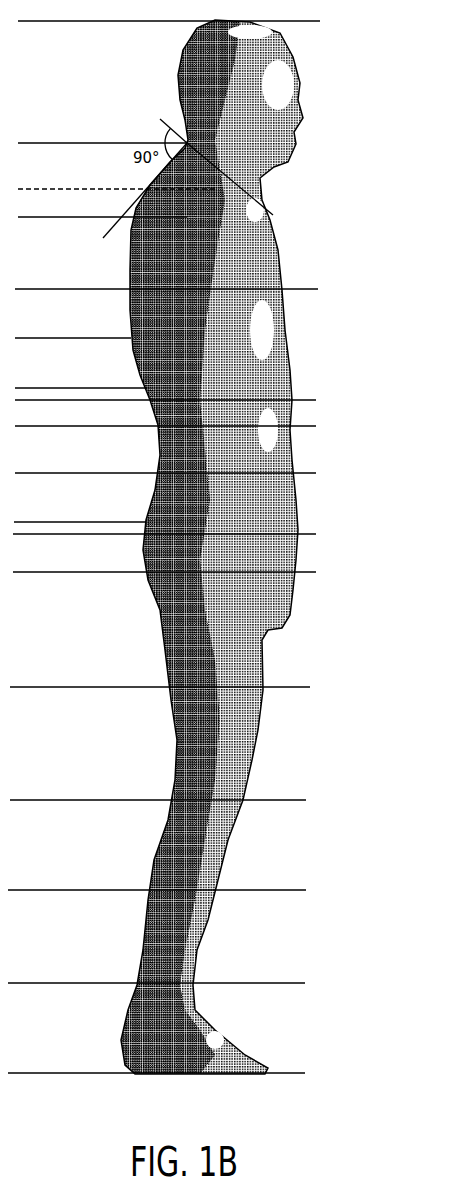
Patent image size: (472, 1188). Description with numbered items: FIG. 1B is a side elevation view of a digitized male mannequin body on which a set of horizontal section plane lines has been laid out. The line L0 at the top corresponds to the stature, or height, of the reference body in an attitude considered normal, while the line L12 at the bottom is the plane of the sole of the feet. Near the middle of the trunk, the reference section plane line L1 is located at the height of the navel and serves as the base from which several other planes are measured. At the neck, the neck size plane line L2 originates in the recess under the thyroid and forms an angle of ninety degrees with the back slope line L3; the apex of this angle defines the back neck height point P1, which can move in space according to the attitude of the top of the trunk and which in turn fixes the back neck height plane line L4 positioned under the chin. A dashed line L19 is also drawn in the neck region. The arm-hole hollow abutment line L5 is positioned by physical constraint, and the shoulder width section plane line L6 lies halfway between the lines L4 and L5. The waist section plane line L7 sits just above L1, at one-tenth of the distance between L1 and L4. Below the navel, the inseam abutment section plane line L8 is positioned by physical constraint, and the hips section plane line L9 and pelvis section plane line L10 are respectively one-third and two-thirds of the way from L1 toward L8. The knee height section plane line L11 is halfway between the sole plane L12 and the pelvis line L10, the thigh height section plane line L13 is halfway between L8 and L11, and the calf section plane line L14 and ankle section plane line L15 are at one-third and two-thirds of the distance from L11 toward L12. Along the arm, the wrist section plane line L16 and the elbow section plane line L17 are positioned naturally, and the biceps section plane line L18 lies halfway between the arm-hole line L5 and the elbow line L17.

The stature line L0 is at (56, 22).
The navel reference section plane line L1 is at (112, 428).
The neck size plane line L2 is at (273, 215).
The back slope line L3 is at (105, 237).
The back neck height plane line L4 is at (33, 143).
The arm-hole hollow abutment line L5 is at (15, 289).
The shoulder width section plane line L6 is at (79, 218).
The waist section plane line L7 is at (100, 400).
The inseam abutment section plane line L8 is at (100, 574).
The hips section plane line L9 is at (140, 476).
The pelvis section plane line L10 is at (48, 522).
The knee height section plane line L11 is at (105, 802).
The sole of the feet plane line L12 is at (105, 1075).
The thigh height section plane line L13 is at (108, 689).
The calf section plane line L14 is at (105, 892).
The ankle section plane line L15 is at (105, 985).
The wrist section plane line L16 is at (100, 536).
The elbow section plane line L17 is at (72, 388).
The biceps section plane line L18 is at (47, 338).
The shoulder dashed reference line L19 is at (22, 189).
The back neck height point P1 is at (187, 142).